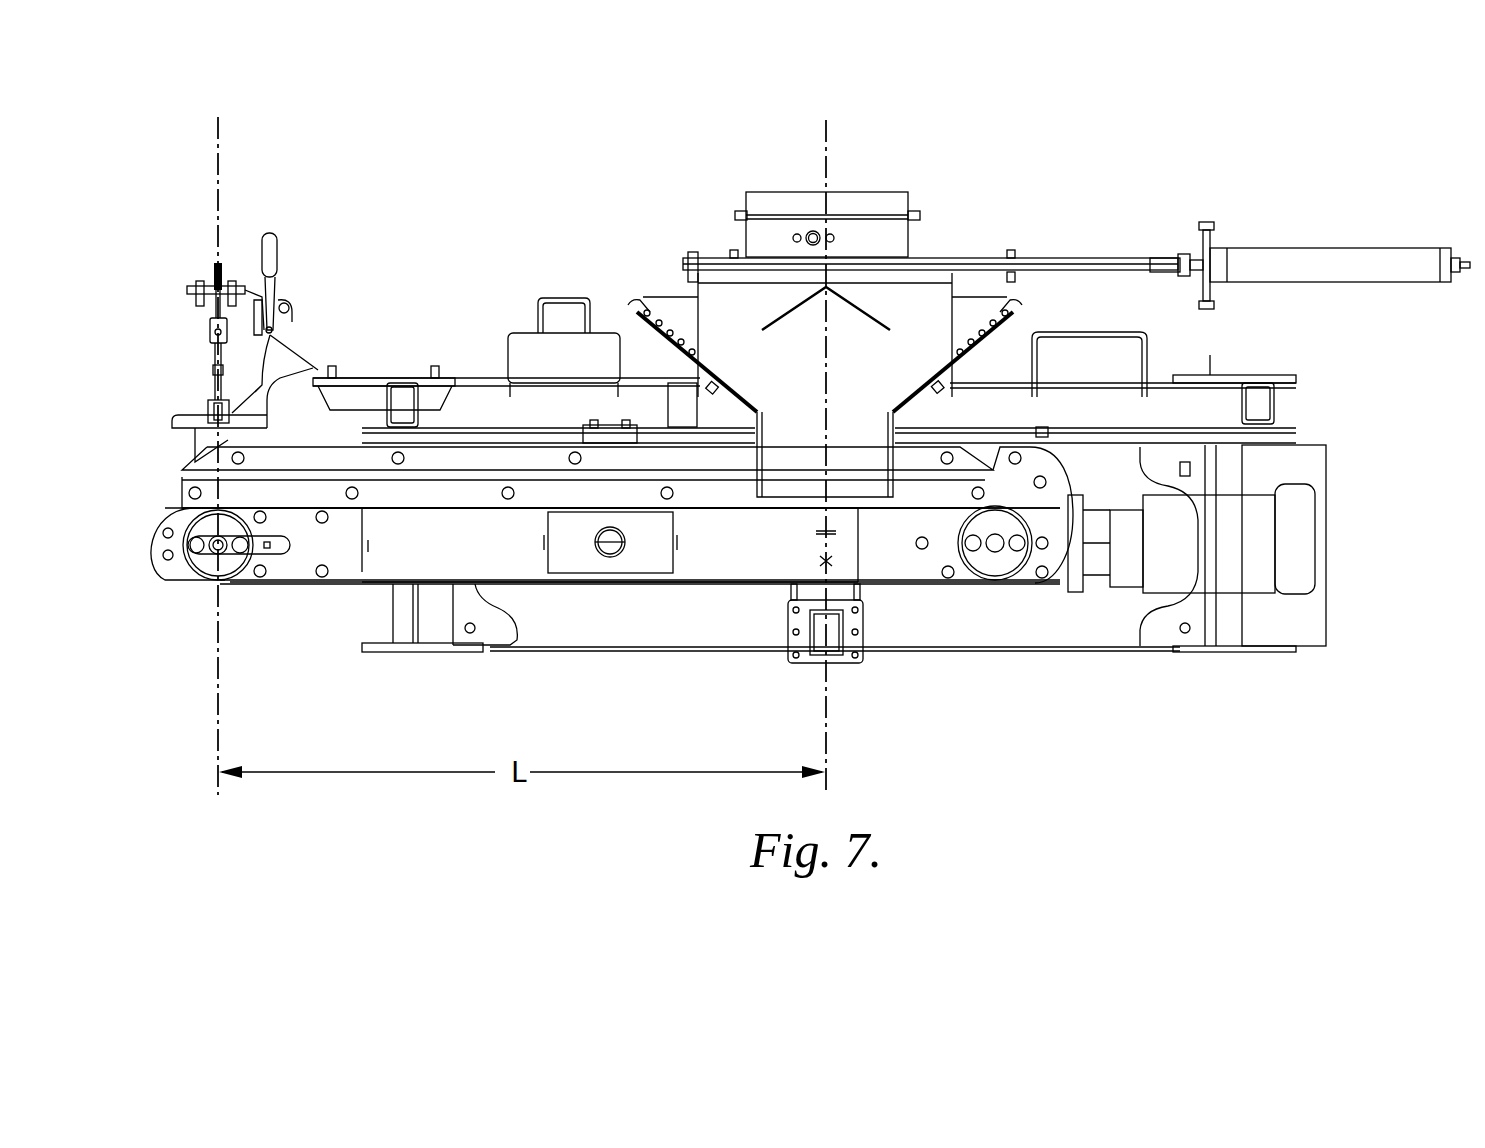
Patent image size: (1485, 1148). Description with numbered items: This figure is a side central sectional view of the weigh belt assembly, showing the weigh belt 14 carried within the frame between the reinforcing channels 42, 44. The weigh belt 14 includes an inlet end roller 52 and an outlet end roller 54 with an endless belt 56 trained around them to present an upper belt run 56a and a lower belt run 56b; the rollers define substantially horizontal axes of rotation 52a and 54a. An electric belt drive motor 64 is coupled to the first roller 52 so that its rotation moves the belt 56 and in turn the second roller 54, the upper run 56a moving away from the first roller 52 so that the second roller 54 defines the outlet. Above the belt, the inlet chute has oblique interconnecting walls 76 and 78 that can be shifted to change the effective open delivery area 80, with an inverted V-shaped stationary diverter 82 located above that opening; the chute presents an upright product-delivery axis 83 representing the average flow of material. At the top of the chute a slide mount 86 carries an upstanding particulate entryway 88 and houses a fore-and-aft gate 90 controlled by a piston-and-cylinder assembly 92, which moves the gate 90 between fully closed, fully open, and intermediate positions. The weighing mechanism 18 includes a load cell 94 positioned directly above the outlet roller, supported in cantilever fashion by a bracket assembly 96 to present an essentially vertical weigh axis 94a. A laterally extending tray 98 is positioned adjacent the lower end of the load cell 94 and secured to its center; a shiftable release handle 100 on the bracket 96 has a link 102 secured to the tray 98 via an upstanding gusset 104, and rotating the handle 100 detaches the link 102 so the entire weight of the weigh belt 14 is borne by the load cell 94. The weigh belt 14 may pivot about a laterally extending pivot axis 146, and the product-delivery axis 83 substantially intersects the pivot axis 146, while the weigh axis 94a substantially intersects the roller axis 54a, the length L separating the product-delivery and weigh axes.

The weigh belt 14 is at (277, 660).
The weighing mechanism 18 is at (237, 311).
The reinforcing channel 42 is at (525, 333).
The reinforcing channel 44 is at (1140, 348).
The inlet end roller 52 is at (1037, 575).
The axis of rotation 52a is at (998, 548).
The outlet end roller 54 is at (213, 572).
The axis of rotation 54a is at (212, 552).
The endless belt 56 is at (367, 585).
The upper belt run 56a is at (405, 505).
The lower belt run 56b is at (527, 582).
The electric belt drive motor 64 is at (1290, 545).
The oblique interconnecting wall 76 is at (738, 393).
The oblique interconnecting wall 78 is at (915, 392).
The delivery area 80 is at (805, 490).
The stationary diverter 82 is at (858, 307).
The product-delivery axis 83 is at (827, 710).
The slide mount 86 is at (1115, 262).
The particulate entryway 88 is at (888, 200).
The gate 90 is at (718, 265).
The piston-and-cylinder assembly 92 is at (1395, 255).
The load cell 94 is at (212, 330).
The weigh axis 94a is at (216, 708).
The bracket assembly 96 is at (313, 370).
The tray 98 is at (190, 420).
The release handle 100 is at (270, 237).
The link 102 is at (267, 348).
The gusset 104 is at (262, 400).
The pivot axis 146 is at (835, 562).